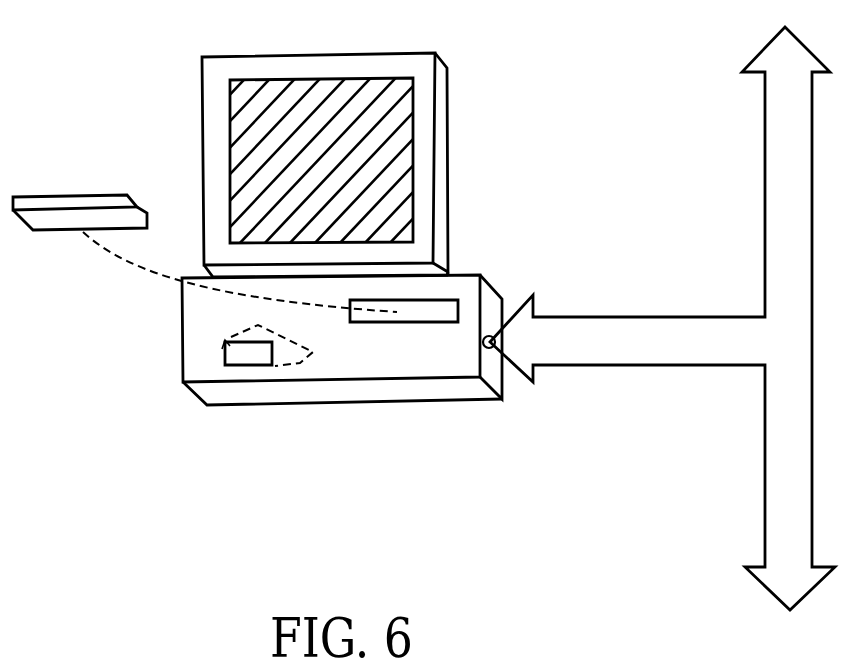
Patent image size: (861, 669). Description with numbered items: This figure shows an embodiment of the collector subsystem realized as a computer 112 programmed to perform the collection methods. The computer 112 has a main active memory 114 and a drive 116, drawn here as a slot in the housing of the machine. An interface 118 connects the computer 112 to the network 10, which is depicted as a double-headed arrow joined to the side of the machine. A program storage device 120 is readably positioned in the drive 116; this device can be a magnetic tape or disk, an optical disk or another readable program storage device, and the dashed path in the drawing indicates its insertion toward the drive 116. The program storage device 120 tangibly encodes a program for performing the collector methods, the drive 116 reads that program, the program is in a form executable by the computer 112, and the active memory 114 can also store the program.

The network 10 is at (765, 367).
The computer 112 is at (463, 72).
The main active memory 114 is at (223, 360).
The drive 116 is at (397, 322).
The interface 118 is at (472, 400).
The program storage device 120 is at (57, 194).